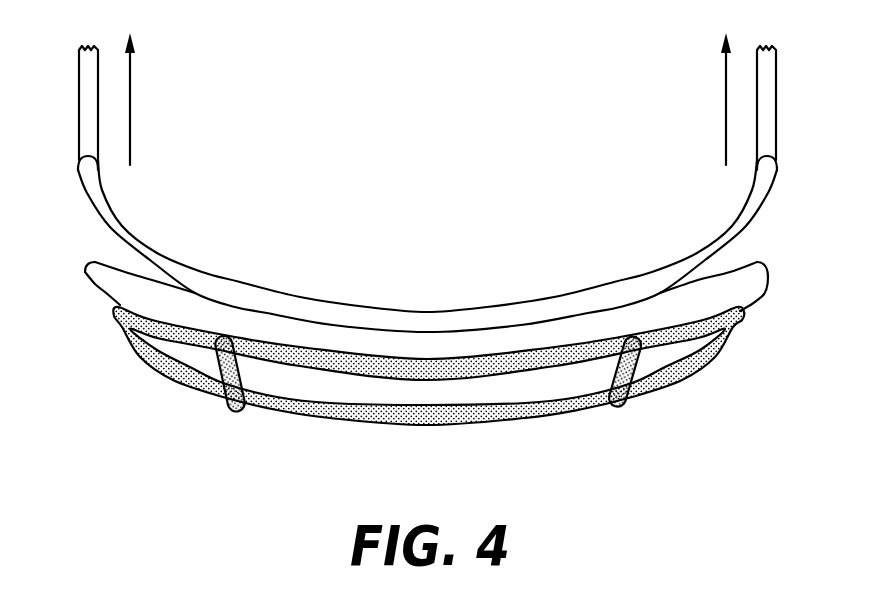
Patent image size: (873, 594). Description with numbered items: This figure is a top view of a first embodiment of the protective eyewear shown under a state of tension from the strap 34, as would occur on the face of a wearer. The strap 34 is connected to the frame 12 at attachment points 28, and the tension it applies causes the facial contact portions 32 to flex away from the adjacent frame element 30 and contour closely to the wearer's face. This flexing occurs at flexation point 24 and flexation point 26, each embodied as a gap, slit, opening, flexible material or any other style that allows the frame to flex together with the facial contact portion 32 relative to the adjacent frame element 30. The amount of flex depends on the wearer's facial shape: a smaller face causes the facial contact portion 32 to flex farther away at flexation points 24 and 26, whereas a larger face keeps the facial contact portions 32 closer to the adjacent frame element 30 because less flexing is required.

The frame 12 is at (424, 290).
The flexation point 24 is at (160, 283).
The flexation point 26 is at (687, 285).
The attachment points 28 is at (777, 158).
The adjacent frame element 30 is at (112, 290).
The facial contact portions 32 is at (233, 280).
The strap 34 is at (79, 123).